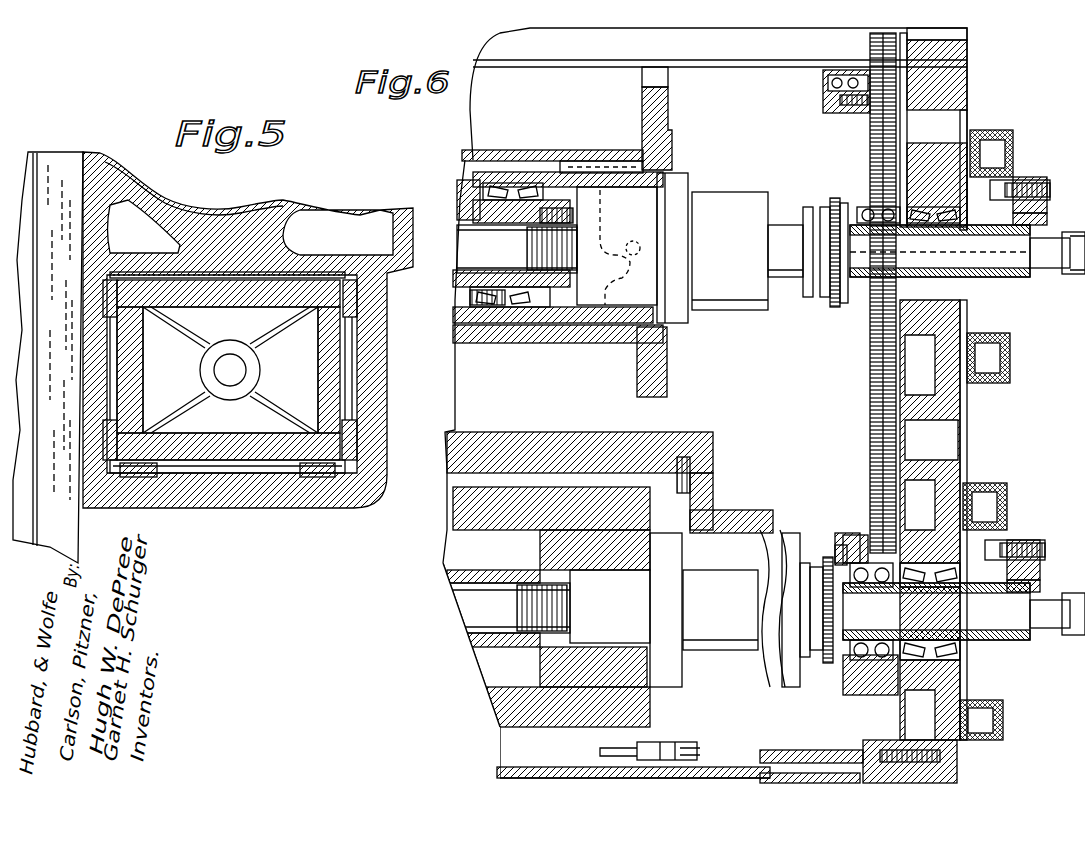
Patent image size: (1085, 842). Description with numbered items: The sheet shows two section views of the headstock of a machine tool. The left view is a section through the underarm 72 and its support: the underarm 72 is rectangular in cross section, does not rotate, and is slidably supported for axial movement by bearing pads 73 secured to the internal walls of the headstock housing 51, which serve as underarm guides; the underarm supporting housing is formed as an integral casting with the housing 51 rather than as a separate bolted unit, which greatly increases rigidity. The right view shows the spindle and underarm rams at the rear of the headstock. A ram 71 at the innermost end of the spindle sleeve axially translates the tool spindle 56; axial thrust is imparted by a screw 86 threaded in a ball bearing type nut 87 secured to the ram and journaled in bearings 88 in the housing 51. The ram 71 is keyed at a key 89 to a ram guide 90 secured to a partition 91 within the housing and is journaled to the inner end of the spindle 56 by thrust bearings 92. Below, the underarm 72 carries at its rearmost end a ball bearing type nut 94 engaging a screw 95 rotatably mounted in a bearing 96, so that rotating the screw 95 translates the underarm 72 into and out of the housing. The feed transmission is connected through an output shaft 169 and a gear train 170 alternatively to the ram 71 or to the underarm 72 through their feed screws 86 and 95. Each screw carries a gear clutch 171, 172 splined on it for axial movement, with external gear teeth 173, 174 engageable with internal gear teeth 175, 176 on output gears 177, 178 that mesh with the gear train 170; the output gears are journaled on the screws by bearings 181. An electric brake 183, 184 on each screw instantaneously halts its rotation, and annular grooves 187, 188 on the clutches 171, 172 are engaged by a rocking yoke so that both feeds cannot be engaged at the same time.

In FIG. 5, the housing 51 is at (374, 276).
In FIG. 6, the tool spindle 56 is at (465, 200).
In FIG. 6, the ram 71 is at (660, 192).
In FIG. 5, the underarm 72 is at (213, 462).
In FIG. 6, the underarm 72 is at (455, 500).
In FIG. 5, the bearing pads 73 is at (142, 478).
In FIG. 6, the screw 86 is at (468, 260).
In FIG. 6, the ball bearing type nut 87 is at (748, 198).
In FIG. 6, the bearings 88 is at (950, 290).
In FIG. 6, the key 89 is at (612, 160).
In FIG. 6, the ram guide 90 is at (610, 337).
In FIG. 6, the partition 91 is at (667, 378).
In FIG. 6, the thrust bearings 92 is at (525, 302).
In FIG. 6, the ball bearing type nut 94 is at (710, 590).
In FIG. 6, the screw 95 is at (460, 605).
In FIG. 6, the bearing 96 is at (950, 565).
In FIG. 6, the output shaft 169 is at (748, 60).
In FIG. 6, the gear train 170 is at (865, 124).
In FIG. 6, the gear clutch 171 is at (815, 295).
In FIG. 6, the gear clutch 172 is at (805, 660).
In FIG. 6, the external gear teeth 173 is at (832, 305).
In FIG. 6, the external gear teeth 174 is at (838, 560).
In FIG. 6, the internal gear teeth 175 is at (845, 305).
In FIG. 6, the internal gear teeth 176 is at (830, 668).
In FIG. 6, the output gear 177 is at (875, 175).
In FIG. 6, the output gear 178 is at (862, 540).
In FIG. 6, the bearings 181 is at (865, 205).
In FIG. 6, the electric brake 183 is at (985, 373).
In FIG. 6, the electric brake 184 is at (985, 505).
In FIG. 6, the annular groove 187 is at (810, 210).
In FIG. 6, the annular groove 188 is at (815, 655).